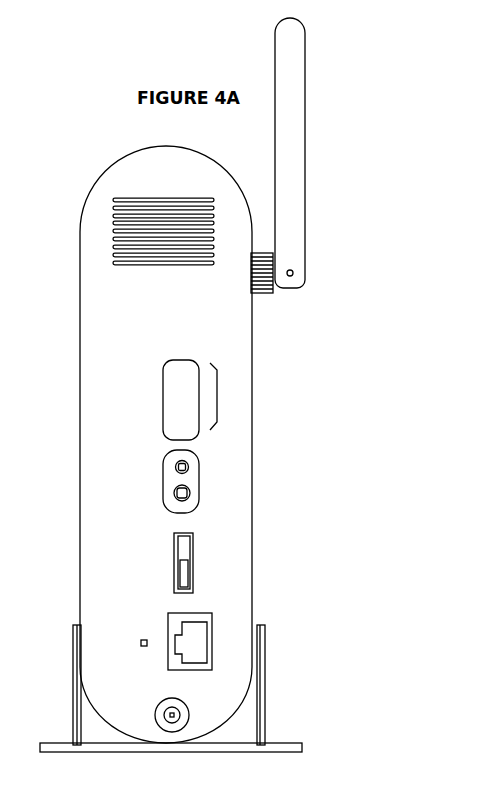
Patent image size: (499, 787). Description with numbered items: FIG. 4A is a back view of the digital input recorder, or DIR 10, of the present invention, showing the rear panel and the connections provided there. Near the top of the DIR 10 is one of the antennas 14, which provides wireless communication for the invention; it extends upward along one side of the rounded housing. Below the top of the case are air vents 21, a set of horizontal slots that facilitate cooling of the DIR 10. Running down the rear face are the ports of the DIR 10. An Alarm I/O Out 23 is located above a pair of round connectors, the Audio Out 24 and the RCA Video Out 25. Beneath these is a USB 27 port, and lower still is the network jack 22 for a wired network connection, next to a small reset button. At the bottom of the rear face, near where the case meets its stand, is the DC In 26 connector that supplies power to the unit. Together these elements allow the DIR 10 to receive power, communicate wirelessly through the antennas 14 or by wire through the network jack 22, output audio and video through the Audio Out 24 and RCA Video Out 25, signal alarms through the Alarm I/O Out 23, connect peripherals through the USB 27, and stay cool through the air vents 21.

The digital input recorder 10 is at (115, 137).
The antennas 14 is at (310, 132).
The air vents 21 is at (107, 223).
The Alarm I/O Out port 23 is at (217, 385).
The Audio Out port 24 is at (189, 467).
The RCA Video Out port 25 is at (190, 493).
The USB port 27 is at (239, 570).
The RJ-45 port 22 is at (235, 647).
The DC In port 26 is at (189, 715).